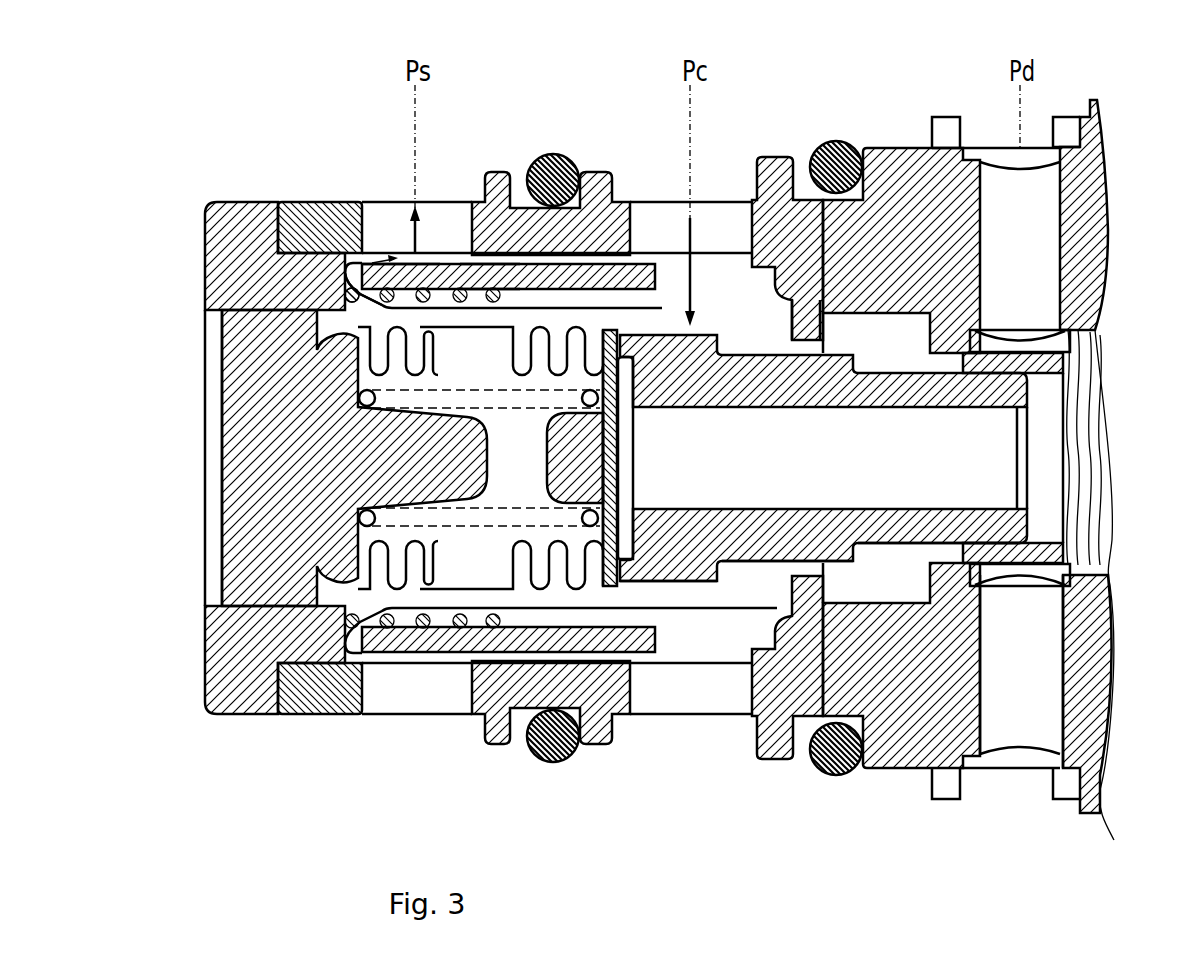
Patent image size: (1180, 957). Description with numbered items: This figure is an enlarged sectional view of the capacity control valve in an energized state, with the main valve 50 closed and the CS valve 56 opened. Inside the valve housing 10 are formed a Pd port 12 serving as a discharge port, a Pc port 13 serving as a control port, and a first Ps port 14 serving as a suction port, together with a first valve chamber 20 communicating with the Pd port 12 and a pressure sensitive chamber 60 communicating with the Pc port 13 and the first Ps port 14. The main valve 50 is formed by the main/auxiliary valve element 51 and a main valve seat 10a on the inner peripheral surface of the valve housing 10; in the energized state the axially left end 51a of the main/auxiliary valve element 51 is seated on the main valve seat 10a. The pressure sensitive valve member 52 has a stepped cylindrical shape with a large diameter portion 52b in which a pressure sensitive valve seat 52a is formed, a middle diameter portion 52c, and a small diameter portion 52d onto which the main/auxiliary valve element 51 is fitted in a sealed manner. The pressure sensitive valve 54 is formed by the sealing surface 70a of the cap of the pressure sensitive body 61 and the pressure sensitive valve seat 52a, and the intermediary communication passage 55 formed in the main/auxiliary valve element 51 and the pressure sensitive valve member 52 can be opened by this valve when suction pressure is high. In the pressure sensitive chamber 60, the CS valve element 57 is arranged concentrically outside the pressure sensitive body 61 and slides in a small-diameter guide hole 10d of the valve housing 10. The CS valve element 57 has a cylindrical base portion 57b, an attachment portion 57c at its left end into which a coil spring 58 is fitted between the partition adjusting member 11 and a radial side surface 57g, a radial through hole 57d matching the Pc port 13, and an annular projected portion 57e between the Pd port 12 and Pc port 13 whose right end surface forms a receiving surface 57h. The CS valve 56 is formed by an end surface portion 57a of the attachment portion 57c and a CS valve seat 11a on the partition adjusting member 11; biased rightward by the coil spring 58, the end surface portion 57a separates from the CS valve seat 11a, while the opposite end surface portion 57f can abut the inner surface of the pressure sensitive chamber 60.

The valve housing 10 is at (310, 199).
The partition adjusting member 11 is at (245, 199).
The Pd port 12 is at (1066, 135).
The Pc port 13 is at (643, 228).
The first Ps port 14 is at (372, 210).
The first valve chamber 20 is at (1052, 344).
The main valve 50 is at (1007, 53).
The main/auxiliary valve element 51 is at (1075, 605).
The pressure sensitive valve member 52 is at (742, 585).
The pressure sensitive valve 54 is at (660, 820).
The intermediary communication passage 55 is at (1028, 578).
The CS valve 56 is at (113, 249).
The CS valve element 57 is at (449, 658).
The coil spring 58 is at (354, 630).
The pressure sensitive chamber 60 is at (897, 336).
The pressure sensitive body 61 is at (407, 592).
The main valve seat 10a is at (947, 350).
The small-diameter guide hole 10d is at (573, 268).
The CS valve seat 11a is at (345, 282).
The axially left end 51a is at (965, 350).
The pressure sensitive valve seat 52a is at (598, 576).
The large diameter portion 52b is at (700, 592).
The middle diameter portion 52c is at (764, 552).
The small diameter portion 52d is at (901, 535).
The end surface portion 57a is at (345, 261).
The base portion 57b is at (540, 287).
The attachment portion 57c is at (402, 262).
The through hole 57d is at (763, 267).
The annular projected portion 57e is at (807, 355).
The end surface portion 57f is at (830, 172).
The side surface 57g is at (483, 273).
The receiving surface 57h is at (833, 342).
The sealing surface 70a is at (641, 566).